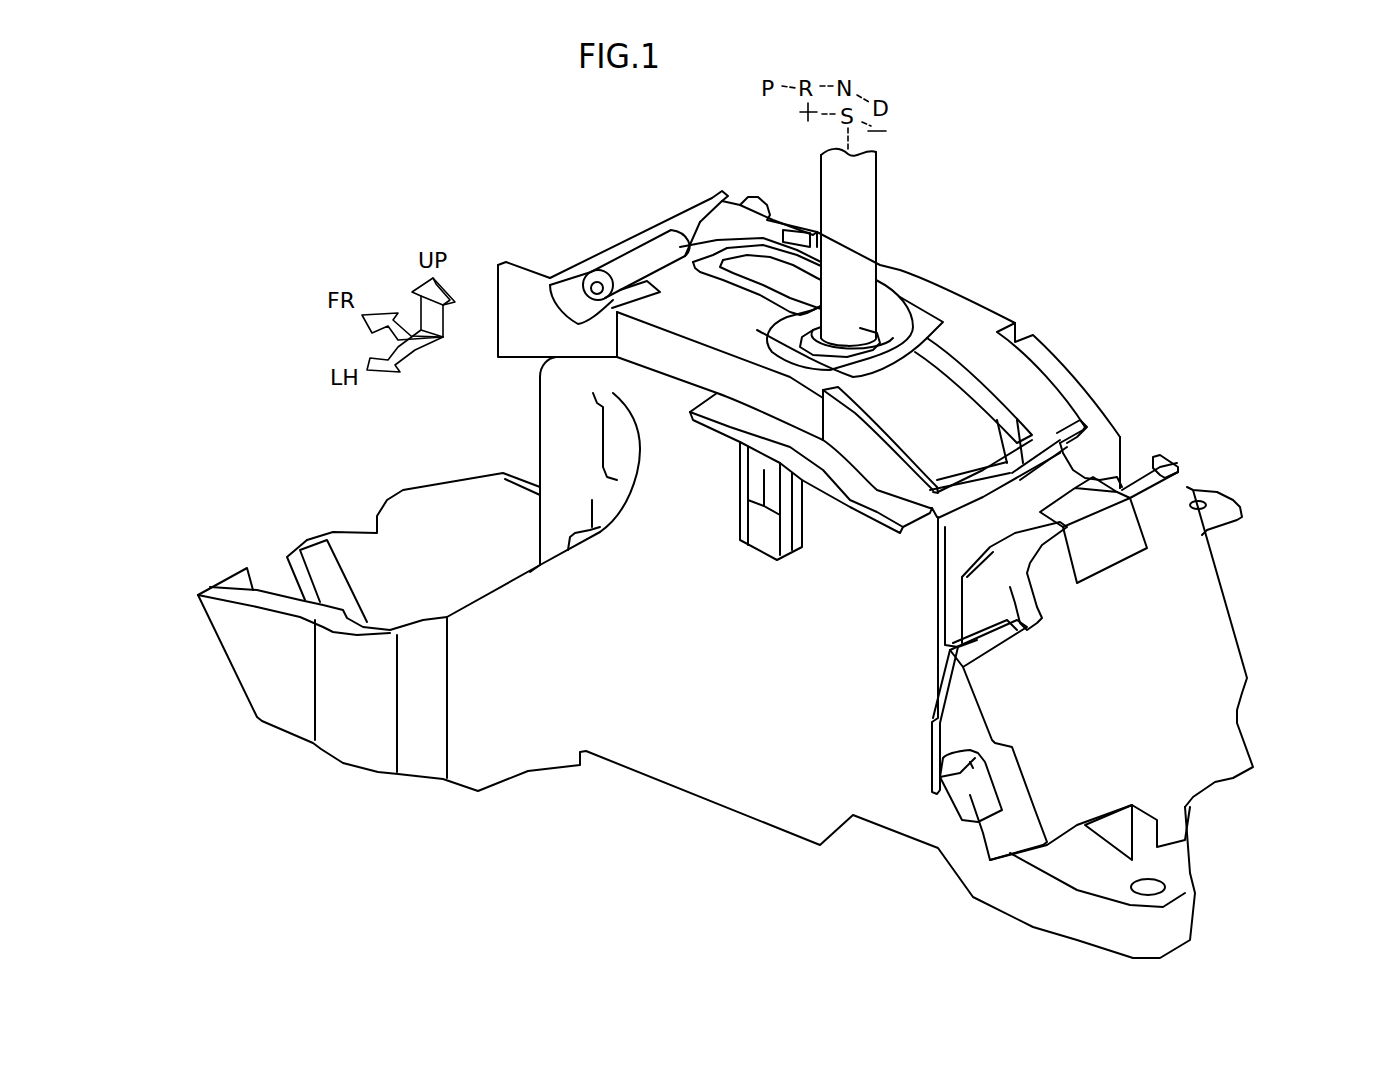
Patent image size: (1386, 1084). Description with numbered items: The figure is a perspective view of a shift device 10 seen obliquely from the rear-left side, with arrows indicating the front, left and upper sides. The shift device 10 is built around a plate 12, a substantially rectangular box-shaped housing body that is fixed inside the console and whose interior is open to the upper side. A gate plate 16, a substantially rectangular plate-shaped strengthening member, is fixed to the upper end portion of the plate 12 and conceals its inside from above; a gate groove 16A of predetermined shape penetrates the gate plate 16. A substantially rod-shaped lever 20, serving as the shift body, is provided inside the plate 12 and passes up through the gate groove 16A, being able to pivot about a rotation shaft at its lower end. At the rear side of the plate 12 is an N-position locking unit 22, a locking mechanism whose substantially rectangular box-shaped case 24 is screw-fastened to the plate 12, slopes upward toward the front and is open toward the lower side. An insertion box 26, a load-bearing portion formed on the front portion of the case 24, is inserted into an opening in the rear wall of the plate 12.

The shift device 10 is at (1094, 262).
The plate 12 is at (540, 420).
The gate plate 16 is at (810, 354).
The gate groove 16A is at (767, 280).
The lever 20 is at (878, 198).
The N-position locking unit 22 is at (1119, 663).
The case 24 is at (1245, 617).
The insertion box 26 is at (1165, 561).